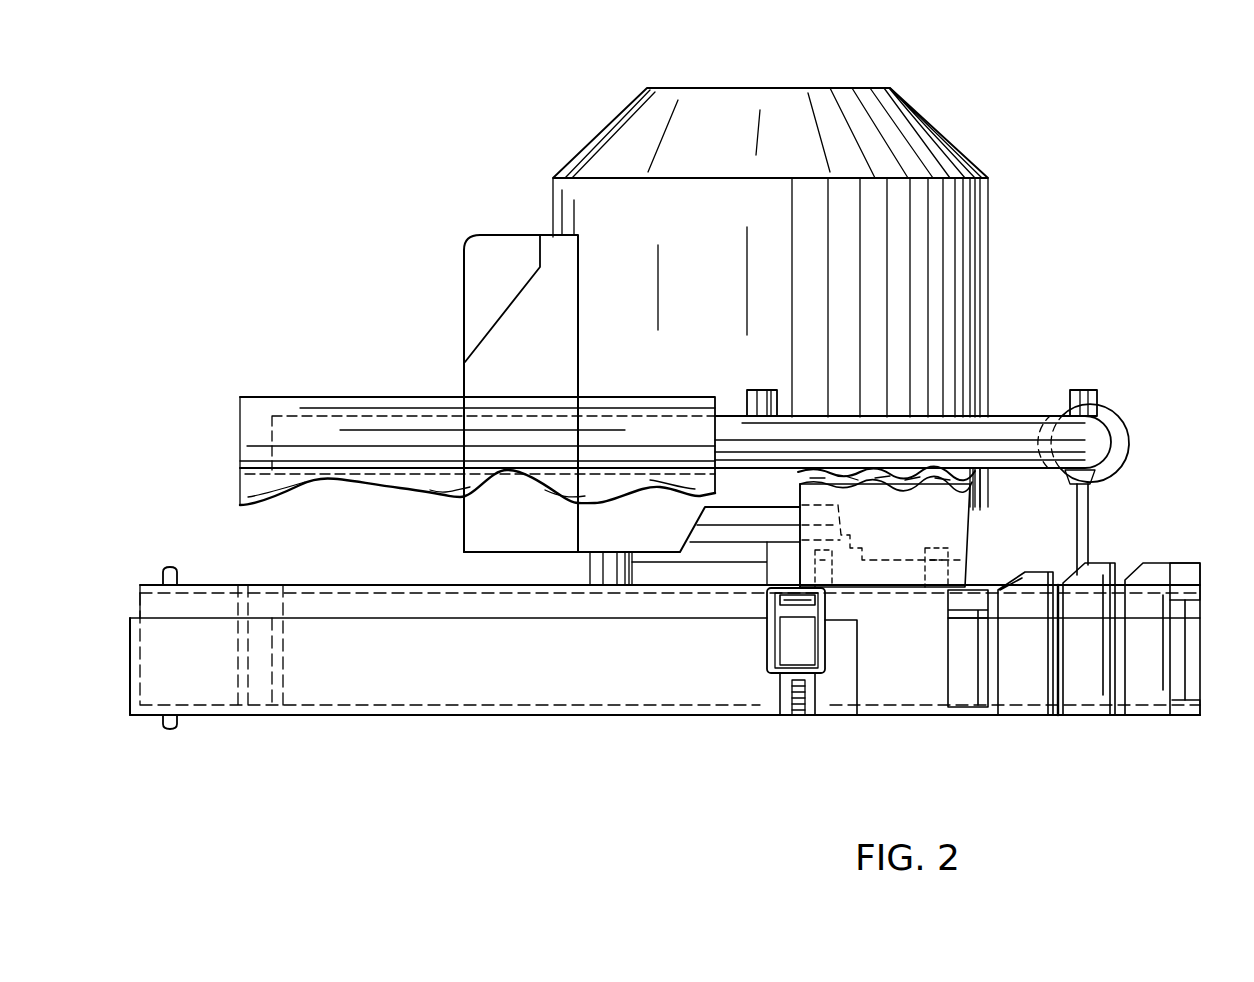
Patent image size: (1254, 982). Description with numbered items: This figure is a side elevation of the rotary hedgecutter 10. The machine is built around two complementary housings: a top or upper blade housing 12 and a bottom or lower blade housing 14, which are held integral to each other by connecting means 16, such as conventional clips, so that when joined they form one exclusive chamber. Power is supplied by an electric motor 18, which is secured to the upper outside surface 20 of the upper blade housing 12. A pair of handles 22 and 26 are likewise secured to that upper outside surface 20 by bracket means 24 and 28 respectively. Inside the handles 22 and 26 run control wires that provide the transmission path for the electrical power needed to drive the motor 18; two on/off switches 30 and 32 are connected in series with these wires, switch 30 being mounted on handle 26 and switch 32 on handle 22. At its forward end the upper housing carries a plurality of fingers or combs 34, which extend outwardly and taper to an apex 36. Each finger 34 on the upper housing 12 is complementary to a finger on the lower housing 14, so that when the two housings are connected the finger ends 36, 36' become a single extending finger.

The rotary hedgecutter 10 is at (1108, 176).
The upper blade housing 12 is at (168, 596).
The lower blade housing 14 is at (467, 706).
The connecting means 16 is at (823, 645).
The electric motor 18 is at (791, 99).
The upper outside surface 20 is at (378, 586).
The handle 22 is at (1130, 443).
The bracket means 24 is at (1090, 513).
The handle 26 is at (373, 397).
The bracket means 28 is at (953, 513).
The on/off switch 30 is at (757, 390).
The on/off switch 32 is at (1085, 390).
The fingers or combs 34 is at (1176, 565).
The apex 36 is at (1212, 583).
The finger end 36' is at (1213, 688).